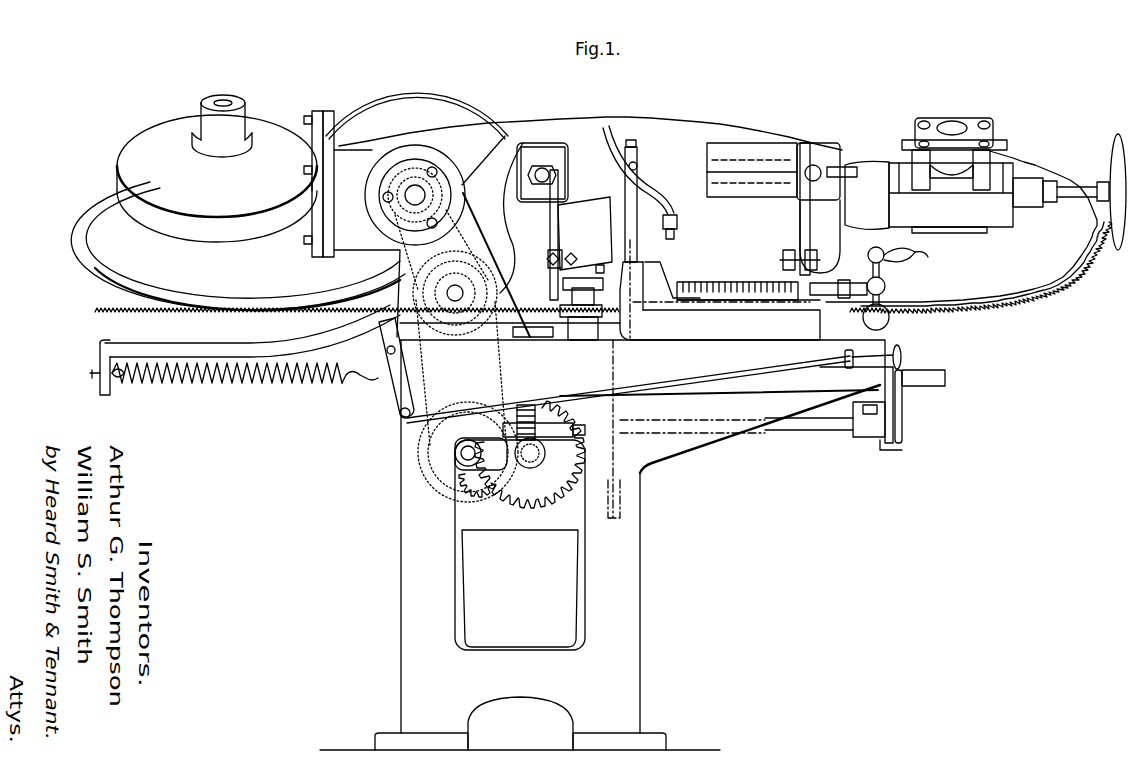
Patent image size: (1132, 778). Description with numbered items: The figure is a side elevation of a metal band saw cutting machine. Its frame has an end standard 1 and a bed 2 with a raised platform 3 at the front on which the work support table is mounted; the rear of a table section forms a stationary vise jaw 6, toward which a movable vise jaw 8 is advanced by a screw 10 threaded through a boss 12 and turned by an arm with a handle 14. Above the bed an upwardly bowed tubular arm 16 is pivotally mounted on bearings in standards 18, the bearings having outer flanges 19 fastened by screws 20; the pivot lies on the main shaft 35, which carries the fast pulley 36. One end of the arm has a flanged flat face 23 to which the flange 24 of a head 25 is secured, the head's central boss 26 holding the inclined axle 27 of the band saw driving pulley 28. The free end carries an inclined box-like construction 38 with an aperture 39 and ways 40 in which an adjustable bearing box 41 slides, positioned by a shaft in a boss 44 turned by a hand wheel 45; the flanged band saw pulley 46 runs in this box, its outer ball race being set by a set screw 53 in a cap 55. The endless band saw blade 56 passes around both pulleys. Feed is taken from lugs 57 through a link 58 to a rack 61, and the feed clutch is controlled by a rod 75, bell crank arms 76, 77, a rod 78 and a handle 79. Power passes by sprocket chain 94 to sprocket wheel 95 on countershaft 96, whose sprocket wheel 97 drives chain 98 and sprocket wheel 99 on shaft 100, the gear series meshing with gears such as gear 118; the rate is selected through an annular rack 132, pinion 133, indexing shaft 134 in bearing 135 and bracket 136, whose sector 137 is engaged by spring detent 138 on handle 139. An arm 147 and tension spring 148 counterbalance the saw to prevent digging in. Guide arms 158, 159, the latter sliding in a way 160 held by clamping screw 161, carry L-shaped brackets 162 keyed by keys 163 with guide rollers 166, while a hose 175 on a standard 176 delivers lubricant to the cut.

The end standard 1 is at (640, 570).
The bed 2 is at (878, 345).
The platform 3 is at (745, 340).
The stationary vise jaw 6 is at (631, 272).
The movable vise jaw 8 is at (655, 276).
The screw 10 is at (862, 268).
The boss 12 is at (848, 285).
The handle 14 is at (912, 263).
The tubular arm 16 is at (670, 126).
The standards 18 is at (498, 287).
The outer flanges 19 is at (445, 185).
The screws 20 is at (436, 168).
The flanged flat face 23 is at (331, 108).
The flange 24 is at (316, 108).
The head 25 is at (255, 118).
The central boss 26 is at (238, 97).
The axle 27 is at (221, 99).
The band saw driving pulley 28 is at (112, 270).
The main shaft 35 is at (408, 190).
The fast pulley 36 is at (420, 92).
The box-like construction 38 is at (1012, 216).
The aperture 39 is at (1000, 170).
The ways 40 is at (1008, 186).
The adjustable bearing box 41 is at (985, 233).
The boss 44 is at (1040, 192).
The hand wheel 45 is at (1115, 145).
The flanged band saw pulley 46 is at (1055, 272).
The set screw 53 is at (378, 213).
The cap 55 is at (965, 124).
The endless band saw blade 56 is at (920, 312).
The lugs 57 is at (622, 210).
The link 58 is at (616, 233).
The rack 61 is at (622, 492).
The rod 75 is at (527, 320).
The arm of bell crank lever 76 is at (385, 335).
The arm of bell crank lever 77 is at (392, 396).
The rod 78 is at (712, 374).
The handle 79 is at (902, 357).
The sprocket chain 94 is at (480, 222).
The sprocket wheel 95 is at (504, 218).
The countershaft 96 is at (455, 302).
The sprocket wheel 97 is at (470, 322).
The sprocket chain 98 is at (495, 372).
The sprocket wheel 99 is at (520, 441).
The shaft 100 is at (462, 455).
The gear 118 is at (560, 490).
The annular rack 132 is at (530, 462).
The pinion 133 is at (540, 416).
The indexing shaft 134 is at (828, 432).
The bearing 135 is at (505, 430).
The bracket 136 is at (870, 433).
The sector 137 is at (868, 382).
The spring detent 138 is at (900, 397).
The handle 139 is at (942, 375).
The arm 147 is at (222, 342).
The tension spring 148 is at (262, 385).
The arm 158 is at (562, 218).
The arm 159 is at (800, 222).
The way 160 is at (762, 170).
The clamping screw 161 is at (815, 165).
The L-shaped bracket 162 is at (578, 270).
The key 163 is at (552, 256).
The guide rollers 166 is at (582, 322).
The hose 175 is at (662, 190).
The standard 176 is at (638, 172).